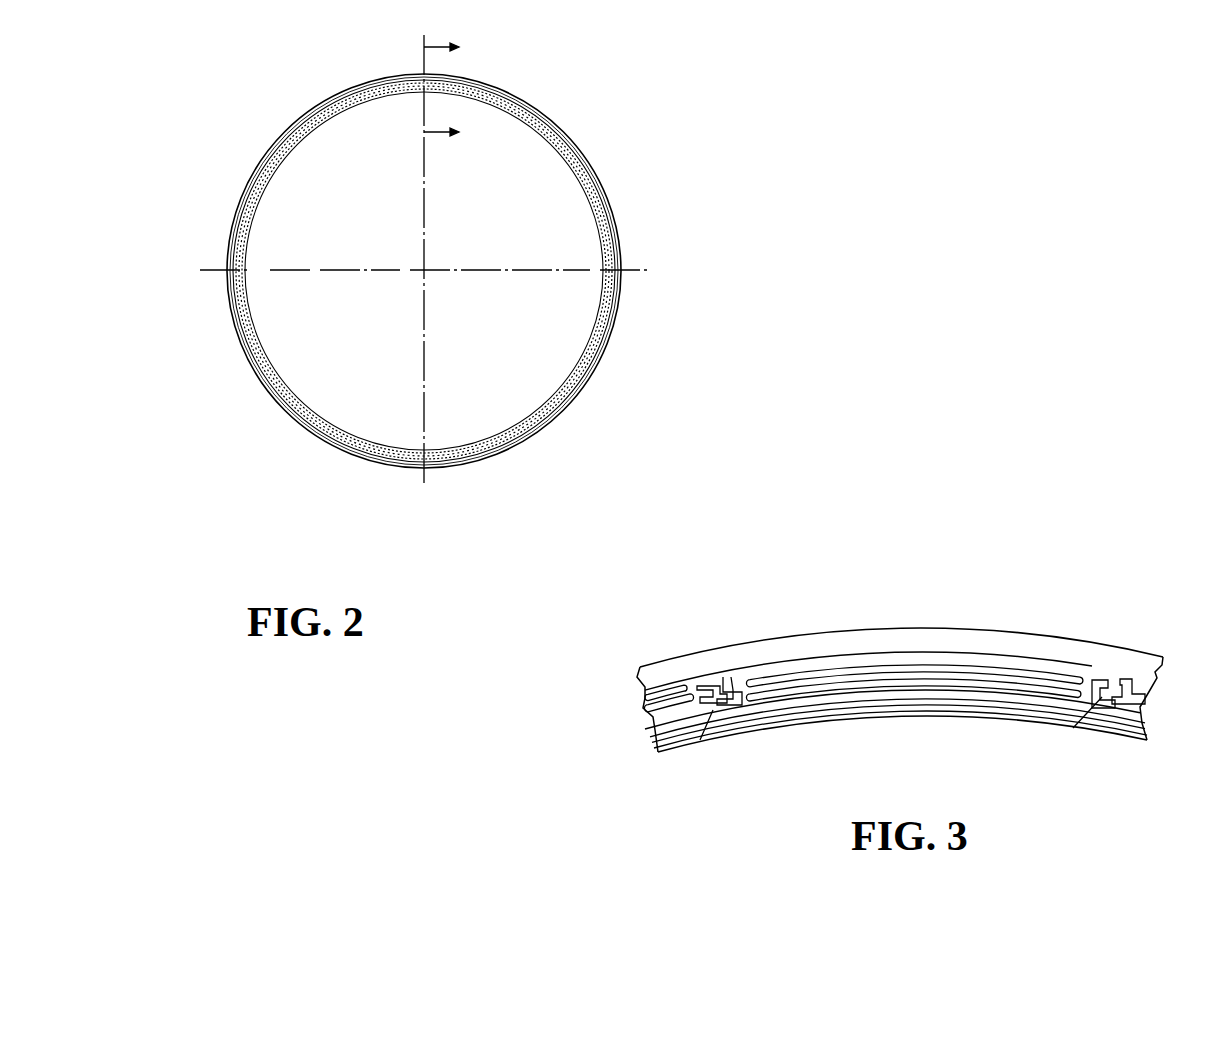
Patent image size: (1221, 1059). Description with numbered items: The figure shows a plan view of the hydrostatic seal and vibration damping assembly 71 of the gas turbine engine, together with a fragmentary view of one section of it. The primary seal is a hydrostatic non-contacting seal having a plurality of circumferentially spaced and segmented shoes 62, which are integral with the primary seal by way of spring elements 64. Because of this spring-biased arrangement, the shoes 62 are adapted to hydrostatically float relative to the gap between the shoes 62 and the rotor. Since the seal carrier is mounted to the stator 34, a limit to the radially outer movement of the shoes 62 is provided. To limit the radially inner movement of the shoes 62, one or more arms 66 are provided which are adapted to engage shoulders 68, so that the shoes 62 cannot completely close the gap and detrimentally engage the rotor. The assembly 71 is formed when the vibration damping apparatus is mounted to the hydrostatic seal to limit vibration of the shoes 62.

In FIG. 2, the hydrostatic seal and vibration damping assembly 71 is at (680, 220).
In FIG. 3, the hydrostatic seal and vibration damping assembly 71 is at (968, 562).
In FIG. 2, the shoe 62 is at (285, 165).
In FIG. 3, the shoe 62 is at (732, 735).
In FIG. 2, the spring element 64 is at (418, 81).
In FIG. 3, the spring element 64 is at (986, 686).
In FIG. 3, the arm 66 is at (732, 677).
In FIG. 3, the shoulder 68 is at (745, 705).
In FIG. 3, the stator 34 is at (709, 650).